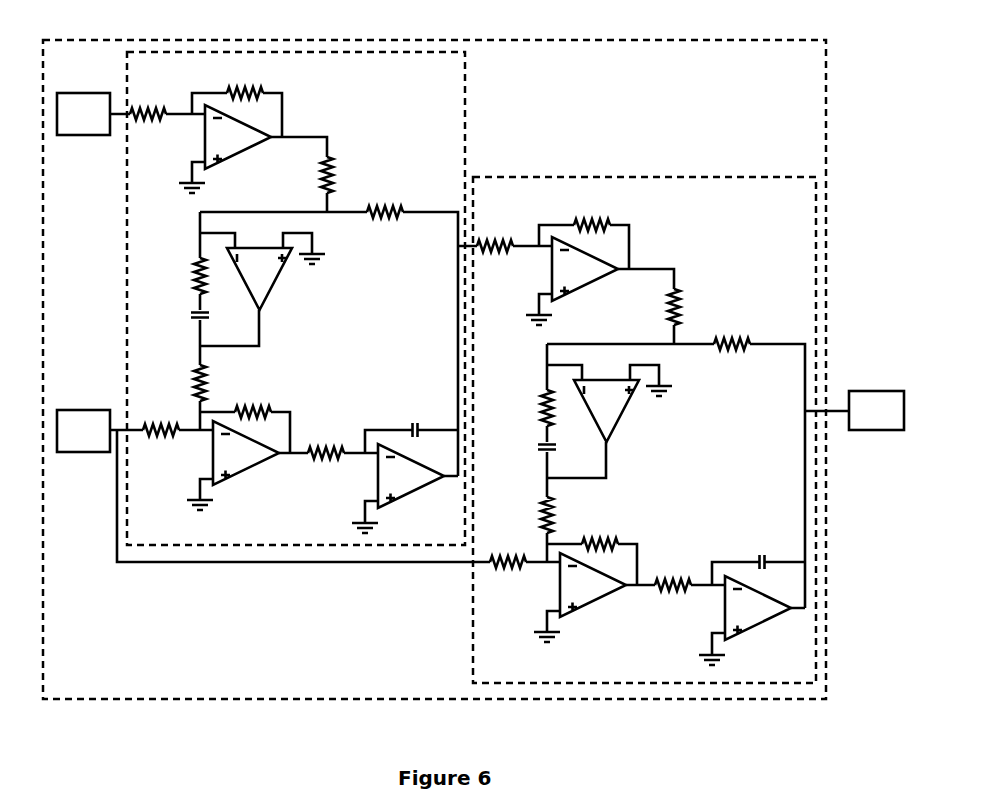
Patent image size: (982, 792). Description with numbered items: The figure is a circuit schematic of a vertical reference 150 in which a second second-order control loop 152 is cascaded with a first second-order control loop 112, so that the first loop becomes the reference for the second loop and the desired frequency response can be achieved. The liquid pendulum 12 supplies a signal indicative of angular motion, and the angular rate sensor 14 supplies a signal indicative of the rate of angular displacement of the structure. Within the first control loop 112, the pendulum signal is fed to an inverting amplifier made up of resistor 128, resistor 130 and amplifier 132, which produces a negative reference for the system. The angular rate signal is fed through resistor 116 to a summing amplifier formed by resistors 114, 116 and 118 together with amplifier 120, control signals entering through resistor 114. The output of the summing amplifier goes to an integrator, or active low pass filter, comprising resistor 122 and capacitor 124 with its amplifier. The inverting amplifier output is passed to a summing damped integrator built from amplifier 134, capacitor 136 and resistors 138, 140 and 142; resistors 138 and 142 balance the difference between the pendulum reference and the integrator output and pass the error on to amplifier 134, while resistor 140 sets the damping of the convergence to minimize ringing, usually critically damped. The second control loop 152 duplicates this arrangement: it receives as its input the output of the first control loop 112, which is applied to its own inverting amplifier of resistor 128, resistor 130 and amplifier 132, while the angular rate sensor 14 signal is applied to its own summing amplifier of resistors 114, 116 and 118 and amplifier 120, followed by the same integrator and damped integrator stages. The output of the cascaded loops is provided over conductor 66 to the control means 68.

The liquid pendulum 12 is at (92, 138).
The angular rate sensor 14 is at (92, 410).
The conductor 66 is at (829, 415).
The control means 68 is at (880, 385).
The second-order control loop 112 is at (122, 77).
The resistor 114 is at (402, 444).
The resistor 116 is at (346, 515).
The resistor 118 is at (446, 466).
The amplifier 120 is at (434, 532).
The resistor 122 is at (506, 496).
The capacitor 124 is at (576, 474).
The resistor 128 is at (465, 387).
The resistor 130 is at (441, 148).
The amplifier 132 is at (426, 217).
The amplifier 134 is at (451, 350).
The capacitor 136 is at (349, 370).
The resistor 138 is at (526, 237).
The resistor 140 is at (347, 338).
The resistor 142 is at (577, 265).
The vertical reference 150 is at (285, 40).
The second control loop 152 is at (633, 172).